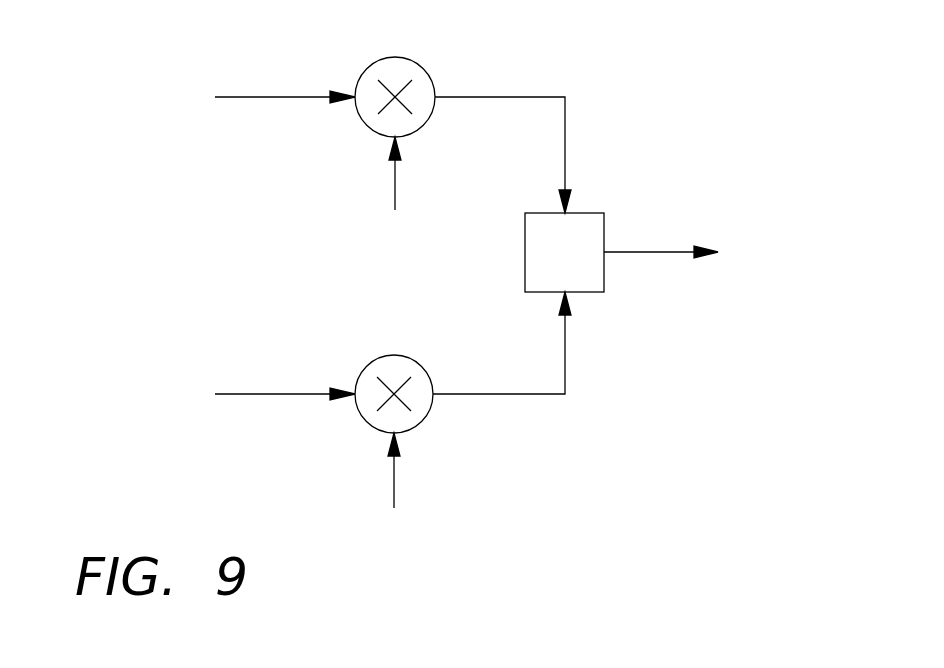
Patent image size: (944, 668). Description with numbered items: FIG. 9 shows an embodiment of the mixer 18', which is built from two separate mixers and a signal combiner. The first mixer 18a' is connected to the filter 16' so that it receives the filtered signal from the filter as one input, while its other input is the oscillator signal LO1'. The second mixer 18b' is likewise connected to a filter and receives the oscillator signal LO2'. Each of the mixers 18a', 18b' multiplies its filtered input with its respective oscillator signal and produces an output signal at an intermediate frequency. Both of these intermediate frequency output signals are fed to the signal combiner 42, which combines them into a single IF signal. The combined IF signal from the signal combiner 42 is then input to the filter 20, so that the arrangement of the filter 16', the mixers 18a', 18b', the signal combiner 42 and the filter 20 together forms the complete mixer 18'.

The filter 16' is at (196, 223).
The mixer 18' is at (532, 271).
The mixer 18a' is at (383, 128).
The mixer 18b' is at (380, 425).
The signal combiner 42 is at (568, 212).
The filter 20 is at (820, 236).